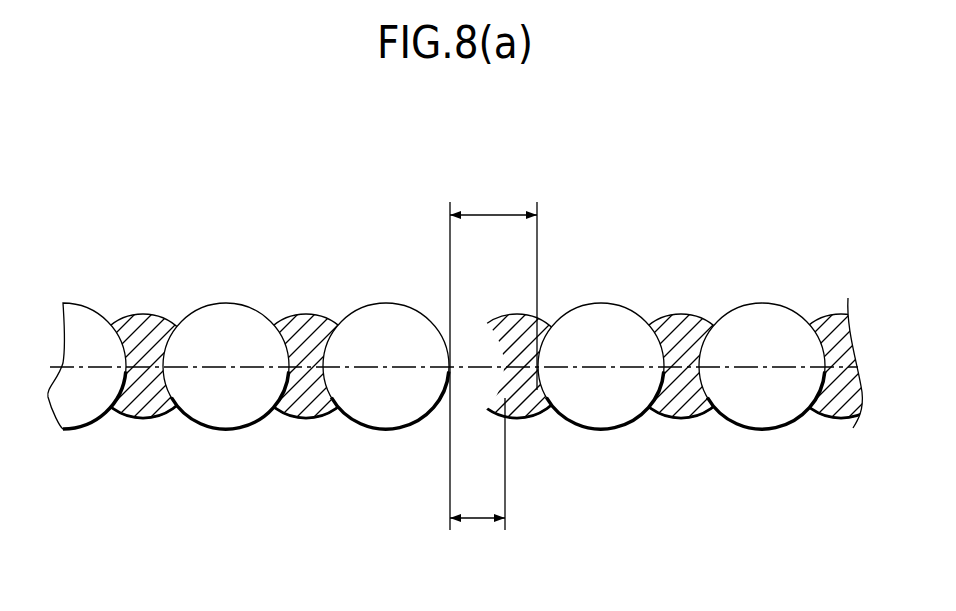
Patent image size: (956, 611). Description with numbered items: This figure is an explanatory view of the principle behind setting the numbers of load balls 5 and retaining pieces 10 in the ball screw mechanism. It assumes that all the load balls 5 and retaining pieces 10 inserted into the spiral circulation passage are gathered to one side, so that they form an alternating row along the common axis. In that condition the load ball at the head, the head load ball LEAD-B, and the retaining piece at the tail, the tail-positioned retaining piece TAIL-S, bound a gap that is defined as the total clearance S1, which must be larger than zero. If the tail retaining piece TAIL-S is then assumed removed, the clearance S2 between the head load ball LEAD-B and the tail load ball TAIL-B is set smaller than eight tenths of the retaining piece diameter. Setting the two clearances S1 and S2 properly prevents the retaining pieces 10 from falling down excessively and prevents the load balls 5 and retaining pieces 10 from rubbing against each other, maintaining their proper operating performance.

The load ball 5 is at (228, 415).
The retaining piece 10 is at (305, 407).
The head load ball LEAD-B is at (372, 320).
The tail load ball TAIL-B is at (620, 323).
The tail-positioned retaining piece TAIL-S is at (528, 322).
The total clearance S1 is at (480, 520).
The clearance between head load ball and tail load ball S2 is at (493, 356).